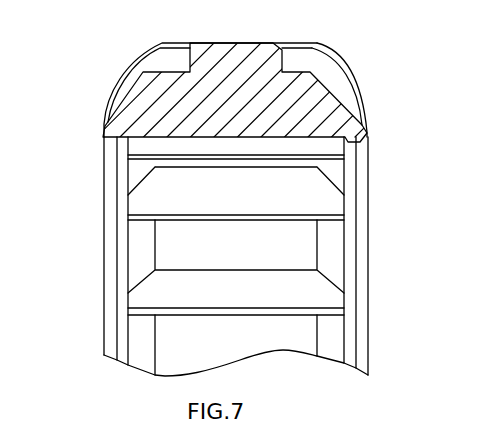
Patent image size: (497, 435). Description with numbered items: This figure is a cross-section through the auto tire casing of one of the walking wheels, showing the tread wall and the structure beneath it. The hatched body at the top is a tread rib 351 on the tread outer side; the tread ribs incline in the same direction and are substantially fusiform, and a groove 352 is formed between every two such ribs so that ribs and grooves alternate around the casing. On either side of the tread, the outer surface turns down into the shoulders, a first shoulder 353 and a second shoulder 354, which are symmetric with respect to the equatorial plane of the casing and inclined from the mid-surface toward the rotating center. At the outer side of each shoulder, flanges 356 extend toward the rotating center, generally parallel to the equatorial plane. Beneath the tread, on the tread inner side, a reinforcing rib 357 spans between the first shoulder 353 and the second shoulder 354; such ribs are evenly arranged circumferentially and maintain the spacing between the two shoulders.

The tread rib 351 is at (236, 52).
The groove 352 is at (313, 48).
The first shoulder 353 is at (112, 101).
The second shoulder 354 is at (353, 99).
The flange 356 is at (124, 161).
The reinforcing rib 357 is at (200, 290).